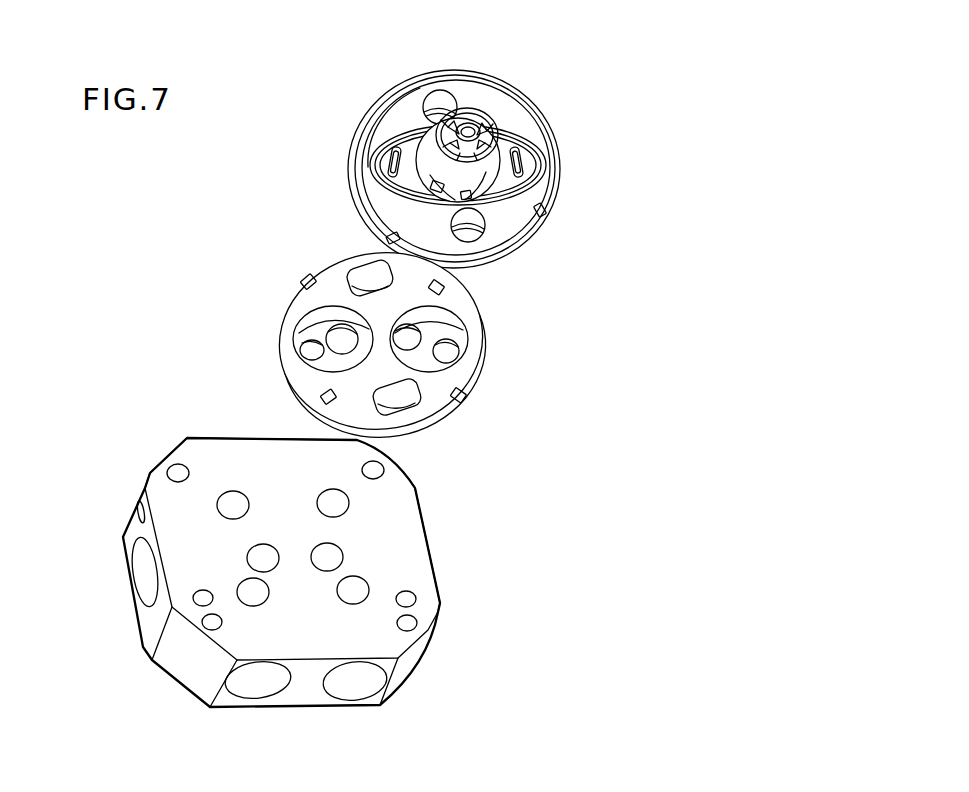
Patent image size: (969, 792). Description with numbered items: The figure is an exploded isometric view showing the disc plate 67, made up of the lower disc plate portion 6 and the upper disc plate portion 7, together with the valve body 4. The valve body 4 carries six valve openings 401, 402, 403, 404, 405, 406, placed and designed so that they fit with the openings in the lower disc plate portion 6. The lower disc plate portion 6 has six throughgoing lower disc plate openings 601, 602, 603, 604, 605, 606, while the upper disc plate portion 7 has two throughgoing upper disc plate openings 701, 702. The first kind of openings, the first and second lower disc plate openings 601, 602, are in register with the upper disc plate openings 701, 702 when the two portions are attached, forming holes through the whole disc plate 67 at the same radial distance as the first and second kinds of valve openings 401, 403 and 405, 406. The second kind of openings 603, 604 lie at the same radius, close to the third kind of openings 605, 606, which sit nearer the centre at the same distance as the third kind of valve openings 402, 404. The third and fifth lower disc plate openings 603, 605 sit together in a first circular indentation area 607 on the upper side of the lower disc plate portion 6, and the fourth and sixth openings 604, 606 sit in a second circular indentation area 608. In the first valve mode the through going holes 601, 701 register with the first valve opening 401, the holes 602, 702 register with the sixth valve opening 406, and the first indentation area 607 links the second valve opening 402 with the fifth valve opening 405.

The valve body 4 is at (420, 652).
The first valve opening 401 is at (340, 506).
The second valve opening 402 is at (343, 543).
The third valve opening 403 is at (232, 502).
The fourth valve opening 404 is at (262, 557).
The fifth valve opening 405 is at (353, 590).
The sixth valve opening 406 is at (250, 588).
The lower disc plate portion 6 is at (428, 432).
The first lower disc plate opening 601 is at (368, 268).
The second lower disc plate opening 602 is at (460, 400).
The third lower disc plate opening 603 is at (457, 365).
The fourth lower disc plate opening 604 is at (322, 337).
The fifth lower disc plate opening 605 is at (460, 350).
The sixth lower disc plate opening 606 is at (340, 333).
The first circular indentation area 607 is at (450, 335).
The second circular indentation area 608 is at (342, 362).
The disc plate 67 is at (547, 42).
The upper disc plate portion 7 is at (452, 72).
The first upper disc plate opening 701 is at (440, 103).
The second upper disc plate opening 702 is at (432, 187).